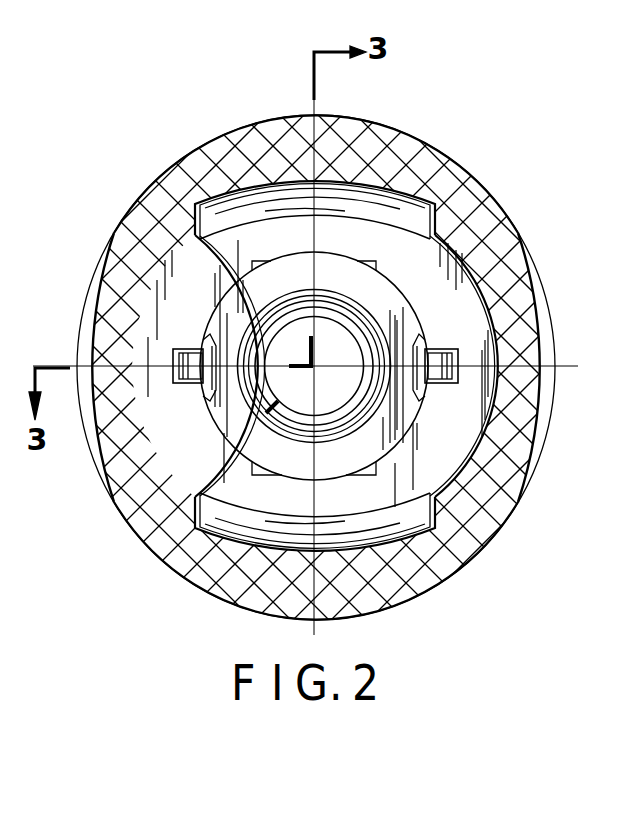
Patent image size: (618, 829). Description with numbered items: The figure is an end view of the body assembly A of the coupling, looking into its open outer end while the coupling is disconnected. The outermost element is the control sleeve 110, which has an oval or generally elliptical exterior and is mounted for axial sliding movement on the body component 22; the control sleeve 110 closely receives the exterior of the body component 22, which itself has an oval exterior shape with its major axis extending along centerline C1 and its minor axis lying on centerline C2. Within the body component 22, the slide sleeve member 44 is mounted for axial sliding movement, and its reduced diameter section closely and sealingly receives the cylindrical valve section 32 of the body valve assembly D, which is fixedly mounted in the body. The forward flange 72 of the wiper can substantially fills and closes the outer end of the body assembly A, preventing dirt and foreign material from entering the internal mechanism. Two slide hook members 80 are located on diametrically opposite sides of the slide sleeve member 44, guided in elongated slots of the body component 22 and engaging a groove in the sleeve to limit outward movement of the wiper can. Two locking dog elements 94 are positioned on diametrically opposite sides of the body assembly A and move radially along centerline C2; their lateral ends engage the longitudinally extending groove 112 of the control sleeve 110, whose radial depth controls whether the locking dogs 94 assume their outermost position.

The body component 22 is at (110, 478).
The valve section 32 is at (333, 330).
The slide sleeve member 44 is at (373, 340).
The forward flange 72 is at (388, 427).
The slide hook member 80 is at (197, 375).
The locking dog element 94 is at (413, 218).
The control sleeve 110 is at (362, 128).
The groove 112 is at (217, 193).
The body assembly A is at (462, 147).
The centerline C1 is at (562, 362).
The centerline C2 is at (313, 112).
The body valve assembly D is at (260, 410).